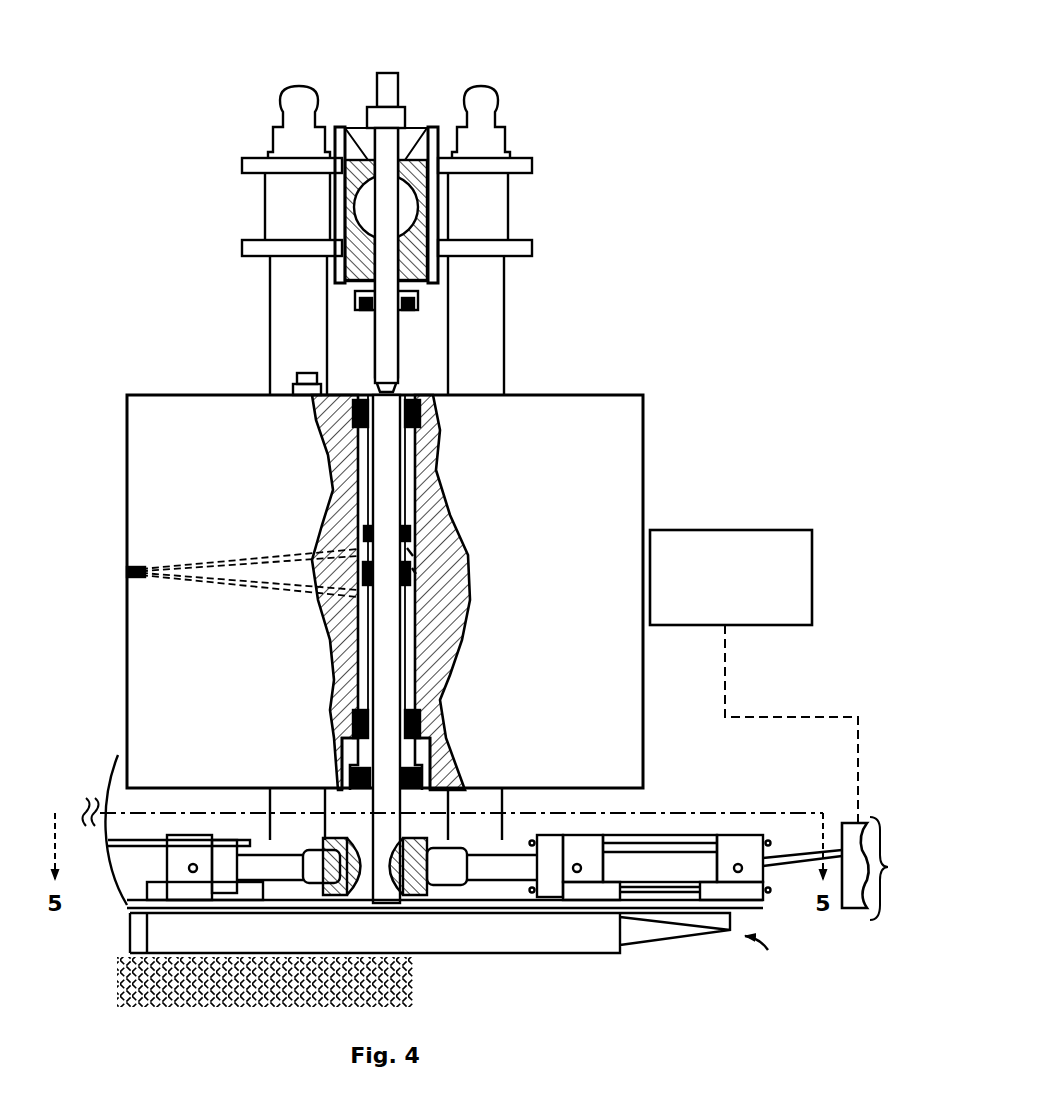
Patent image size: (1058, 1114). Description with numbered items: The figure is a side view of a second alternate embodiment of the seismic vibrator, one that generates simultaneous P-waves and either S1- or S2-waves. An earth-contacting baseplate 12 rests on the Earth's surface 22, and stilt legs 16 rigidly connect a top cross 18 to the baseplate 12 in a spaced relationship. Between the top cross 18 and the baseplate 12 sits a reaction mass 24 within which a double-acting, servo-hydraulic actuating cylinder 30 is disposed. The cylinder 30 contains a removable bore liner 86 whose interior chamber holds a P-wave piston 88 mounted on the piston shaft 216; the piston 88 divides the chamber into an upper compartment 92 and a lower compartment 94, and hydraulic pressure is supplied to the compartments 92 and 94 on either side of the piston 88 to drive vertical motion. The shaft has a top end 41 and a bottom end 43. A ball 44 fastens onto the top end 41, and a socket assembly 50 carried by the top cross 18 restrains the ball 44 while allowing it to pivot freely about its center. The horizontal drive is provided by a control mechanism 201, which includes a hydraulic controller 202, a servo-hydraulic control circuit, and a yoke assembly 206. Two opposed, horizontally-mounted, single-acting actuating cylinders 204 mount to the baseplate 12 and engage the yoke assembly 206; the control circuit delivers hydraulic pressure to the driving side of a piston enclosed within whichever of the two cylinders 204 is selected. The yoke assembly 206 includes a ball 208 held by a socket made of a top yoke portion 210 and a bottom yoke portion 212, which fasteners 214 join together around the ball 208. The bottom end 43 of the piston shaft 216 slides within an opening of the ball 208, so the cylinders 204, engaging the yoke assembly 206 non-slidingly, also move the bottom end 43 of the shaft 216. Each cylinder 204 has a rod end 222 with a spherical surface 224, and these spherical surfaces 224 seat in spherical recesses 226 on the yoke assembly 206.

The baseplate 12 is at (620, 947).
The stilt legs 16 is at (505, 312).
The top cross 18 is at (508, 208).
The Earth's surface 22 is at (133, 945).
The reaction mass 24 is at (647, 468).
The actuating cylinder 30 is at (420, 581).
The top end 41 is at (370, 330).
The bottom end 43 is at (393, 905).
The ball 44 is at (422, 125).
The socket assembly 50 is at (410, 166).
The removable bore liner 86 is at (372, 533).
The P-wave piston 88 is at (417, 572).
The upper compartment 92 is at (415, 555).
The lower compartment 94 is at (468, 645).
The control mechanism 201 is at (904, 868).
The hydraulic controller 202 is at (685, 528).
The actuating cylinders 204 is at (127, 907).
The yoke assembly 206 is at (430, 905).
The ball 208 is at (358, 905).
The top yoke portion 210 is at (420, 847).
The bottom yoke portion 212 is at (330, 905).
The fasteners 214 is at (347, 840).
The piston shaft 216 is at (413, 597).
The rod ends 222 is at (252, 910).
The spherical surface 224 is at (290, 908).
The spherical recesses 226 is at (317, 847).